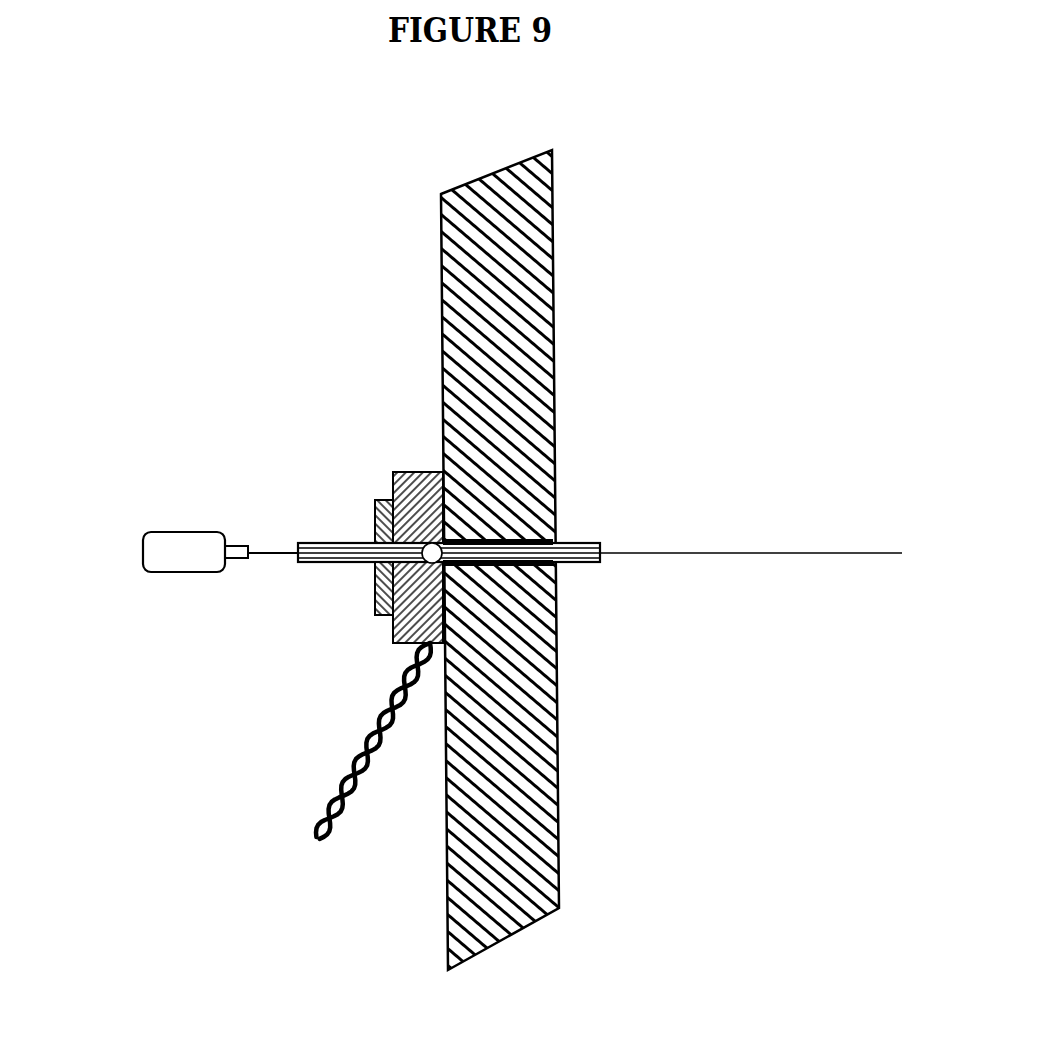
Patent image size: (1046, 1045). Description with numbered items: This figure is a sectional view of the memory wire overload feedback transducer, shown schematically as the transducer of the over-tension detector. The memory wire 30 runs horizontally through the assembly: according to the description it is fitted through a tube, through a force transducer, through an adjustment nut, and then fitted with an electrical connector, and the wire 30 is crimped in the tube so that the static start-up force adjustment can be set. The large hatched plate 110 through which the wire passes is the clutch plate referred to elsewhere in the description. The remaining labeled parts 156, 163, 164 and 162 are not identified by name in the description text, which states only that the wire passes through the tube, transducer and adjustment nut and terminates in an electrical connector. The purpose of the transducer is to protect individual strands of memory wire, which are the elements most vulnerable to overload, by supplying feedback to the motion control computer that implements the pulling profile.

The clutch plate 110 is at (565, 284).
The mounting block 156 is at (460, 459).
The clamp block 163 is at (364, 487).
The connector 164 is at (190, 523).
The memory wire 30 is at (633, 536).
The twisted lead wires 162 is at (430, 746).